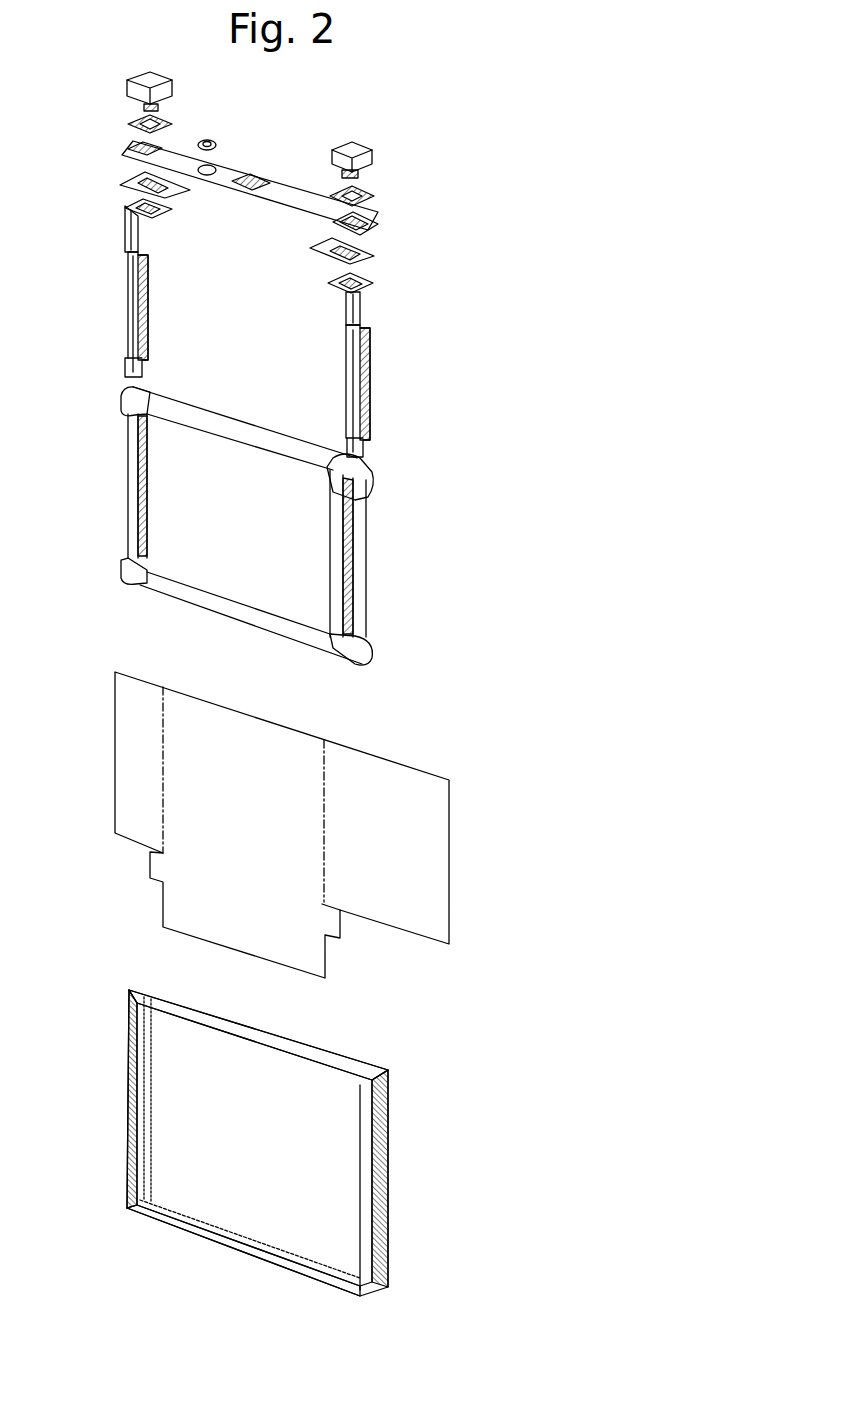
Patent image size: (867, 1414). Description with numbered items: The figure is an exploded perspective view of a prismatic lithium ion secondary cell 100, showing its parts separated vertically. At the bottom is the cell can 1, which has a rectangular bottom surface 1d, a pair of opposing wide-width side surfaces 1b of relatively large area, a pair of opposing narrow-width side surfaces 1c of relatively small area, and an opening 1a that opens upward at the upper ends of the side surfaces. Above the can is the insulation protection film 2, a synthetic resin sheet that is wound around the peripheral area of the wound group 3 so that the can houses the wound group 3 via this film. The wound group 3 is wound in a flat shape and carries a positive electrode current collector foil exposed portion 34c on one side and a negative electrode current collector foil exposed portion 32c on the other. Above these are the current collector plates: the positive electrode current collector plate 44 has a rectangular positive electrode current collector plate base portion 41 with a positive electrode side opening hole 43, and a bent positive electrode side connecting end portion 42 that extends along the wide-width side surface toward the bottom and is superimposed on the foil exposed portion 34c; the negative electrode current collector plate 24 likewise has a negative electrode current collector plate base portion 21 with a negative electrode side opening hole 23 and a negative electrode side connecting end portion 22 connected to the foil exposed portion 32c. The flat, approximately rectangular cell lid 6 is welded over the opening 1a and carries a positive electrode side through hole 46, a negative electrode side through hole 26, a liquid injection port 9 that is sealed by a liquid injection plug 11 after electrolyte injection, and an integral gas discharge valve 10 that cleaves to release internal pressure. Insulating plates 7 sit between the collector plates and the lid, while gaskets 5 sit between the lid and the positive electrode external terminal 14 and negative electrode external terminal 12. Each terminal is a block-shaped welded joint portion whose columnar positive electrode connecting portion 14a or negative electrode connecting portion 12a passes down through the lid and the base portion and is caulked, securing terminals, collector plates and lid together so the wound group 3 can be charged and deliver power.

The prismatic lithium ion secondary cell 100 is at (476, 182).
The cell can 1 is at (400, 1174).
The opening 1a is at (124, 990).
The wide-width side surface 1b is at (183, 1145).
The narrow-width side surface 1c is at (385, 1222).
The bottom surface 1d is at (210, 1242).
The insulation protection film 2 is at (433, 875).
The wound group 3 is at (370, 562).
The negative electrode current collector foil exposed portion 32c is at (358, 598).
The positive electrode current collector foil exposed portion 34c is at (130, 512).
The gasket 5 is at (128, 125).
The cell lid 6 is at (305, 193).
The insulating plate 7 is at (124, 179).
The liquid injection port 9 is at (215, 162).
The gas discharge valve 10 is at (255, 176).
The liquid injection plug 11 is at (208, 136).
The negative electrode external terminal 12 is at (366, 146).
The negative electrode connecting portion 12a is at (366, 168).
The positive electrode external terminal 14 is at (142, 80).
The positive electrode connecting portion 14a is at (142, 105).
The negative electrode current collector plate base portion 21 is at (375, 283).
The negative electrode side connecting end portion 22 is at (356, 416).
The negative electrode side opening hole 23 is at (336, 286).
The negative electrode current collector plate 24 is at (358, 372).
The negative electrode side through hole 26 is at (370, 219).
The positive electrode current collector plate base portion 41 is at (120, 208).
The positive electrode side connecting end portion 42 is at (130, 344).
The positive electrode side opening hole 43 is at (158, 218).
The positive electrode current collector plate 44 is at (124, 302).
The positive electrode side through hole 46 is at (128, 150).